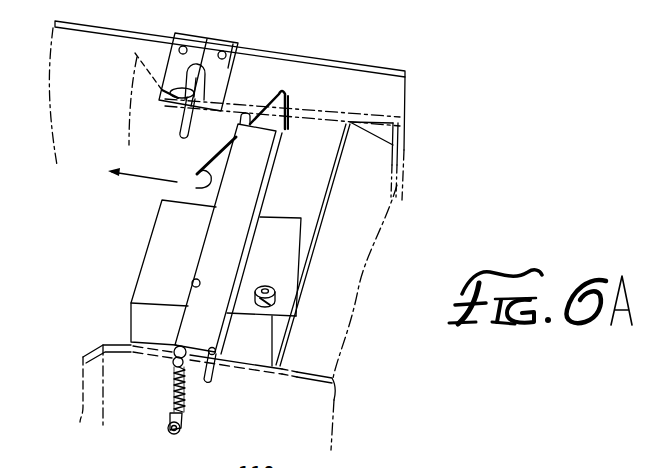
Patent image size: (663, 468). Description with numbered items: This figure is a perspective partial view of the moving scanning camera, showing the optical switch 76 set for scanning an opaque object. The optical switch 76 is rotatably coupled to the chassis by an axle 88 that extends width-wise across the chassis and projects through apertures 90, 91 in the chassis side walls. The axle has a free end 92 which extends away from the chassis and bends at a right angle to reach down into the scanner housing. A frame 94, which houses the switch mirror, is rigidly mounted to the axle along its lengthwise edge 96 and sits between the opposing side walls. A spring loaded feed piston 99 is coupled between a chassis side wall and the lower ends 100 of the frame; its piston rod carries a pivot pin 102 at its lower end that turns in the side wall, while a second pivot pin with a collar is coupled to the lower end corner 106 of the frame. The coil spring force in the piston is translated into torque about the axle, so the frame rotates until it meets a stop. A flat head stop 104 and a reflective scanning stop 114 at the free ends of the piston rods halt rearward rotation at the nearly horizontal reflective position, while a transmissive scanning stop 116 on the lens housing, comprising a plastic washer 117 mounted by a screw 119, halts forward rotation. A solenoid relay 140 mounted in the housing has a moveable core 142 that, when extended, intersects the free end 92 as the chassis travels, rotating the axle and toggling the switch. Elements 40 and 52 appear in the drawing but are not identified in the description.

The rail 40 is at (294, 54).
The bracket 52 is at (388, 122).
The optical switch 76 is at (186, 247).
The axle 88 is at (288, 100).
The aperture 90 is at (282, 120).
The aperture 91 is at (213, 373).
The free end of the axle 92 is at (200, 187).
The frame 94 is at (267, 190).
The lengthwise edge of the frame 96 is at (215, 352).
The feed piston 99 is at (200, 413).
The lower ends of the frame 100 is at (192, 283).
The pivot pin 102 is at (177, 433).
The flat head stop 104 is at (174, 348).
The lower end corner of the frame 106 is at (188, 345).
The reflective scanning stop 114 is at (250, 117).
The transmissive scanning stop 116 is at (269, 275).
The boss 117 is at (277, 288).
The screw 119 is at (273, 300).
The solenoid relay 140 is at (199, 62).
The moveable core 142 is at (181, 135).